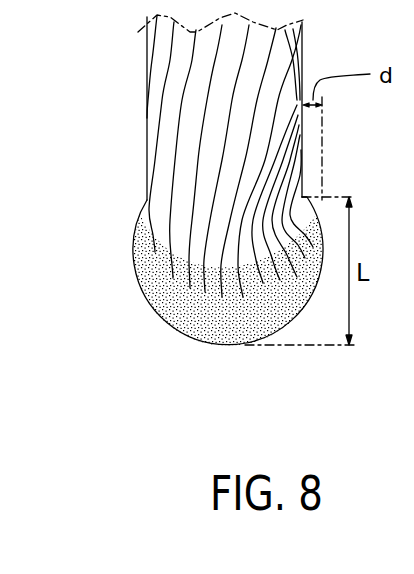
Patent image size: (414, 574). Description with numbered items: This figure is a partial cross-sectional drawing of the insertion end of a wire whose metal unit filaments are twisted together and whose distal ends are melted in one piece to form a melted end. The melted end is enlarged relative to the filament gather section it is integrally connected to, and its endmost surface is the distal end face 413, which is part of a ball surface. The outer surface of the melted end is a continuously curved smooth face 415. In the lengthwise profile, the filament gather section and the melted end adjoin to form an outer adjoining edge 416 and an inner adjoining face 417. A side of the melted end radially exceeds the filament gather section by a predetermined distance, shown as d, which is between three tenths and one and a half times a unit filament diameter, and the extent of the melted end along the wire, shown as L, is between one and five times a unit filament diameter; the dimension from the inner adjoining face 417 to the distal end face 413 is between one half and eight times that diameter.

The distal end face 413 is at (226, 347).
The continuously curved smooth face 415 is at (138, 286).
The outer adjoining edge 416 is at (149, 200).
The inner adjoining face 417 is at (209, 294).